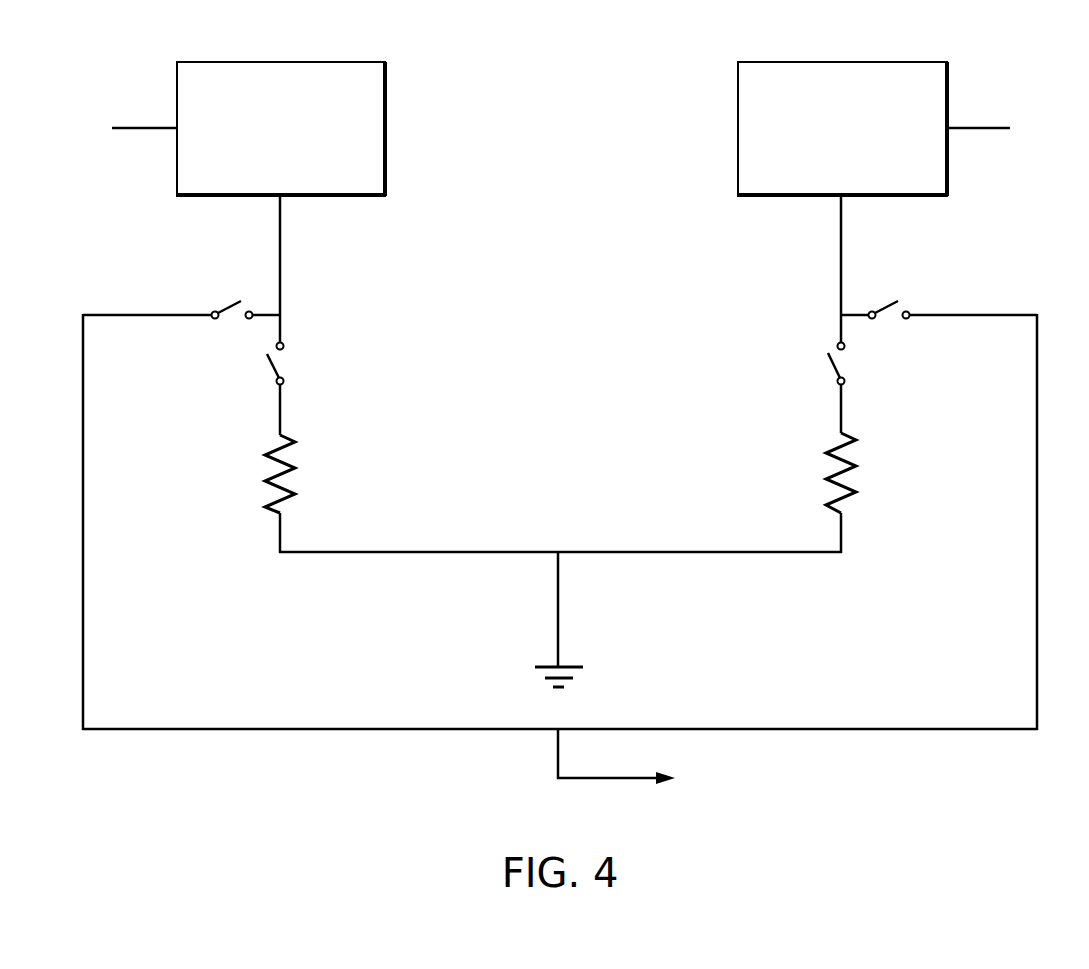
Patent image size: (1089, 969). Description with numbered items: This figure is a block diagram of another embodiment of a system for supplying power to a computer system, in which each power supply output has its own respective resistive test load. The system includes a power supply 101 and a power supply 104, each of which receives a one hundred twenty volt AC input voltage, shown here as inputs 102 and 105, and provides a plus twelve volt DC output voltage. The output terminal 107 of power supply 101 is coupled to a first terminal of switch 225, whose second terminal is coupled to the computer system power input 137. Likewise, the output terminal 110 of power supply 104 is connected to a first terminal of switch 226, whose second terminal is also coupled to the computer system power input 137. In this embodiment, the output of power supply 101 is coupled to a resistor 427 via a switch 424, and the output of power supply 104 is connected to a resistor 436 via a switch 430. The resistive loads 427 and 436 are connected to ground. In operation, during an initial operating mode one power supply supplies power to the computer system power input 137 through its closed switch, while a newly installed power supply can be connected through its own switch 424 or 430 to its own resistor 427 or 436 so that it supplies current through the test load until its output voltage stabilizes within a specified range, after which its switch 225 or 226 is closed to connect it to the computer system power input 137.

The power supply 101 is at (278, 60).
The power supply 104 is at (836, 60).
The 120VAC input to first power supply 102 is at (146, 132).
The 120VAC input to second power supply 105 is at (985, 132).
The output terminal 107 is at (282, 238).
The output terminal 110 is at (843, 236).
The switch 225 is at (231, 318).
The switch 226 is at (888, 318).
The switch 424 is at (283, 361).
The switch 430 is at (826, 361).
The resistor 427 is at (297, 468).
The resistor 436 is at (824, 479).
The computer system power input 137 is at (611, 782).